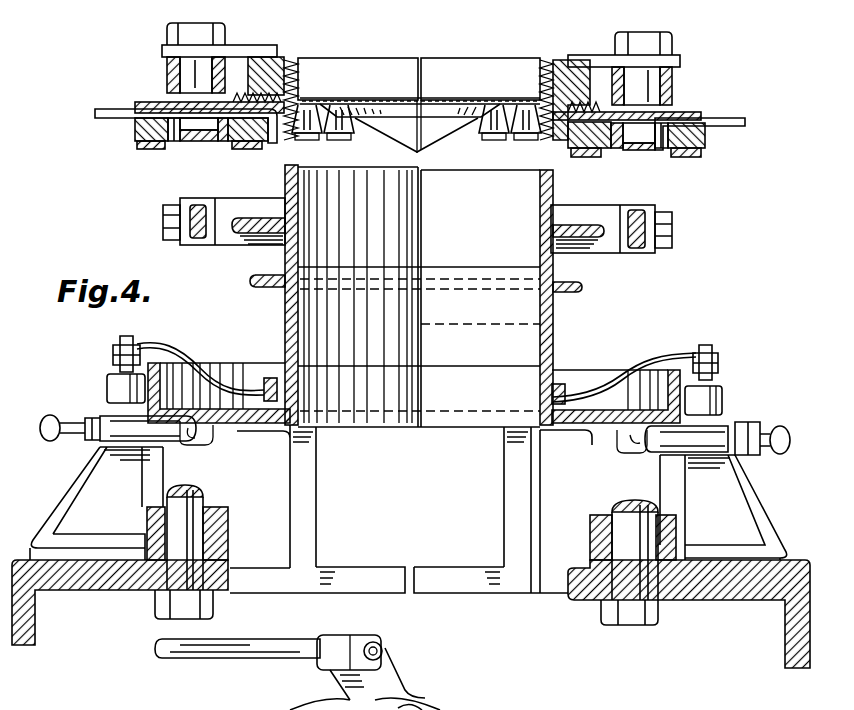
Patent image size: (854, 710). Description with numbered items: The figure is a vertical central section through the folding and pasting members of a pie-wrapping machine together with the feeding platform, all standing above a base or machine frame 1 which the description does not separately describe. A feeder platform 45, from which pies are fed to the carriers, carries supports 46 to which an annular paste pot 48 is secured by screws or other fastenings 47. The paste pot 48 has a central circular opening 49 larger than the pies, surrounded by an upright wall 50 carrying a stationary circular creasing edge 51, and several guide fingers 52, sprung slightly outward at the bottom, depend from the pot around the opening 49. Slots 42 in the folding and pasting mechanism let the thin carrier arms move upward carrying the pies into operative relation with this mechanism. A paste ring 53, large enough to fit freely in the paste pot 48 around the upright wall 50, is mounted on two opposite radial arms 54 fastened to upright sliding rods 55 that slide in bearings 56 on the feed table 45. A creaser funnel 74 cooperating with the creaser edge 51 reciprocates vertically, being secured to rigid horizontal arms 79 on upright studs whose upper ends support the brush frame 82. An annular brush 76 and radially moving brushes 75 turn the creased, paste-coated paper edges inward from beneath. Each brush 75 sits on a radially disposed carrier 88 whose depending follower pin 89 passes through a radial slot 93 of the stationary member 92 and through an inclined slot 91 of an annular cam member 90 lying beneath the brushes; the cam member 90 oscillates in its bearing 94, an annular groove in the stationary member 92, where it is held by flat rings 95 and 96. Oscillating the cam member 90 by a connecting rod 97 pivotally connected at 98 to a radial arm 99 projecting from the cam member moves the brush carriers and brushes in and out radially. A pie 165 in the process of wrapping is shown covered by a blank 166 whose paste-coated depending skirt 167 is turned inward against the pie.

The base frame 1 is at (22, 610).
The slots 42 is at (418, 347).
The feeder platform 45 is at (442, 567).
The supports 46 is at (92, 494).
The fastenings 47 is at (72, 421).
The annular paste pot 48 is at (182, 380).
The central circular opening 49 is at (532, 401).
The wall 50 is at (287, 312).
The creasing edge 51 is at (480, 266).
The guide fingers 52 is at (300, 478).
The paste ring 53 is at (265, 385).
The radial arms 54 is at (210, 376).
The upright sliding rods 55 is at (113, 348).
The bearings 56 is at (107, 385).
The creaser funnel 74 is at (255, 275).
The radially moving brushes 75 is at (520, 140).
The annular brush 76 is at (302, 90).
The rigid arms 79 is at (190, 222).
The brush frame 82 is at (287, 58).
The carrier 88 is at (95, 112).
The follower pin 89 is at (182, 141).
The annular cam member 90 is at (196, 141).
The inclined slots 91 is at (222, 141).
The stationary member 92 is at (135, 132).
The radial slots 93 is at (206, 131).
The bearing 94 is at (140, 145).
The flat ring 95 is at (148, 150).
The flat ring 96 is at (242, 145).
The connecting rod 97 is at (205, 650).
The pivotal connection 98 is at (385, 645).
The radial arm 99 is at (395, 672).
The pie 165 is at (468, 108).
The blank 166 is at (431, 100).
The paste-coated depending skirt 167 is at (320, 130).